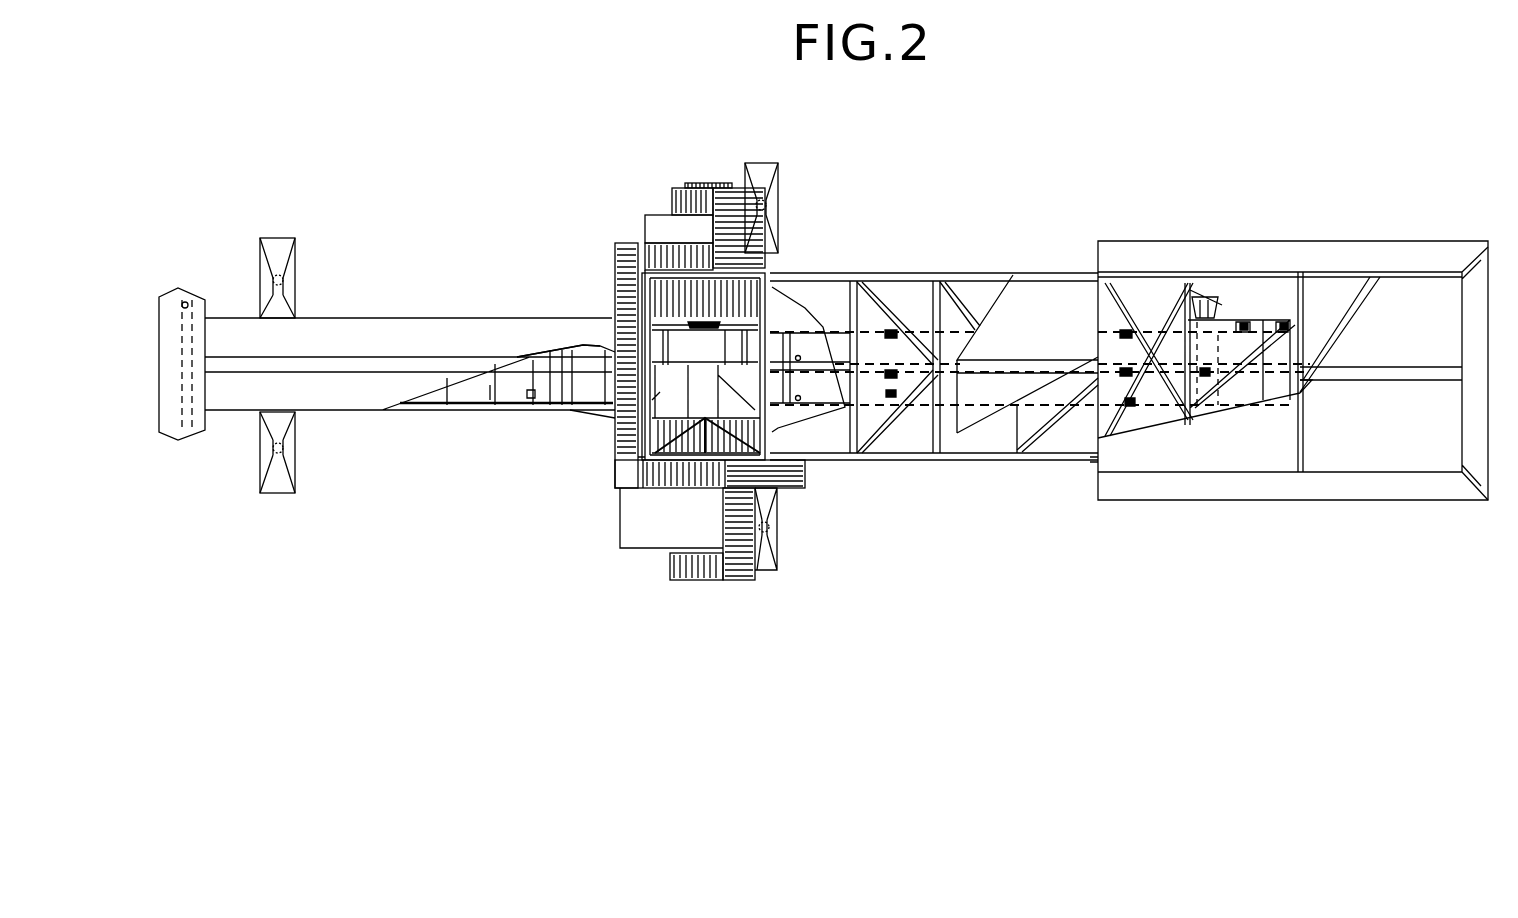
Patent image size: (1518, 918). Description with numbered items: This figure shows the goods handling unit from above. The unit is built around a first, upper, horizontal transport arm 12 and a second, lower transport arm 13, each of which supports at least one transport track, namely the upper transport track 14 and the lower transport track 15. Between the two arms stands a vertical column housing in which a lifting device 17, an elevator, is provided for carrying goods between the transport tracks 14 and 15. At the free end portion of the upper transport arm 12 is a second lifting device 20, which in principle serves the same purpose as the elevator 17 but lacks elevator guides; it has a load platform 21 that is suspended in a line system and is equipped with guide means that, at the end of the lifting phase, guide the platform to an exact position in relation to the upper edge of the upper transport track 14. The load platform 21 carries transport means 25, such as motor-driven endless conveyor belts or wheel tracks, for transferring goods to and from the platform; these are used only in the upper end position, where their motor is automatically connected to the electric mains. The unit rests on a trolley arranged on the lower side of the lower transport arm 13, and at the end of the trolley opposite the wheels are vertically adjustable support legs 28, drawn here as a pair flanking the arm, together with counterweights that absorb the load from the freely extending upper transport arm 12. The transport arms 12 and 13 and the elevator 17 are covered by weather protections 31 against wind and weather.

The upper horizontal transport arm 12 is at (984, 272).
The lower transport arm 13 is at (354, 330).
The transport track 14 is at (921, 330).
The transport track 15 is at (480, 392).
The lifting device 17 is at (613, 433).
The second lifting device 20 is at (1249, 392).
The load platform 21 is at (1228, 320).
The transport means 25 is at (1282, 327).
The support legs 28 is at (255, 262).
The weather protections 31 is at (510, 380).